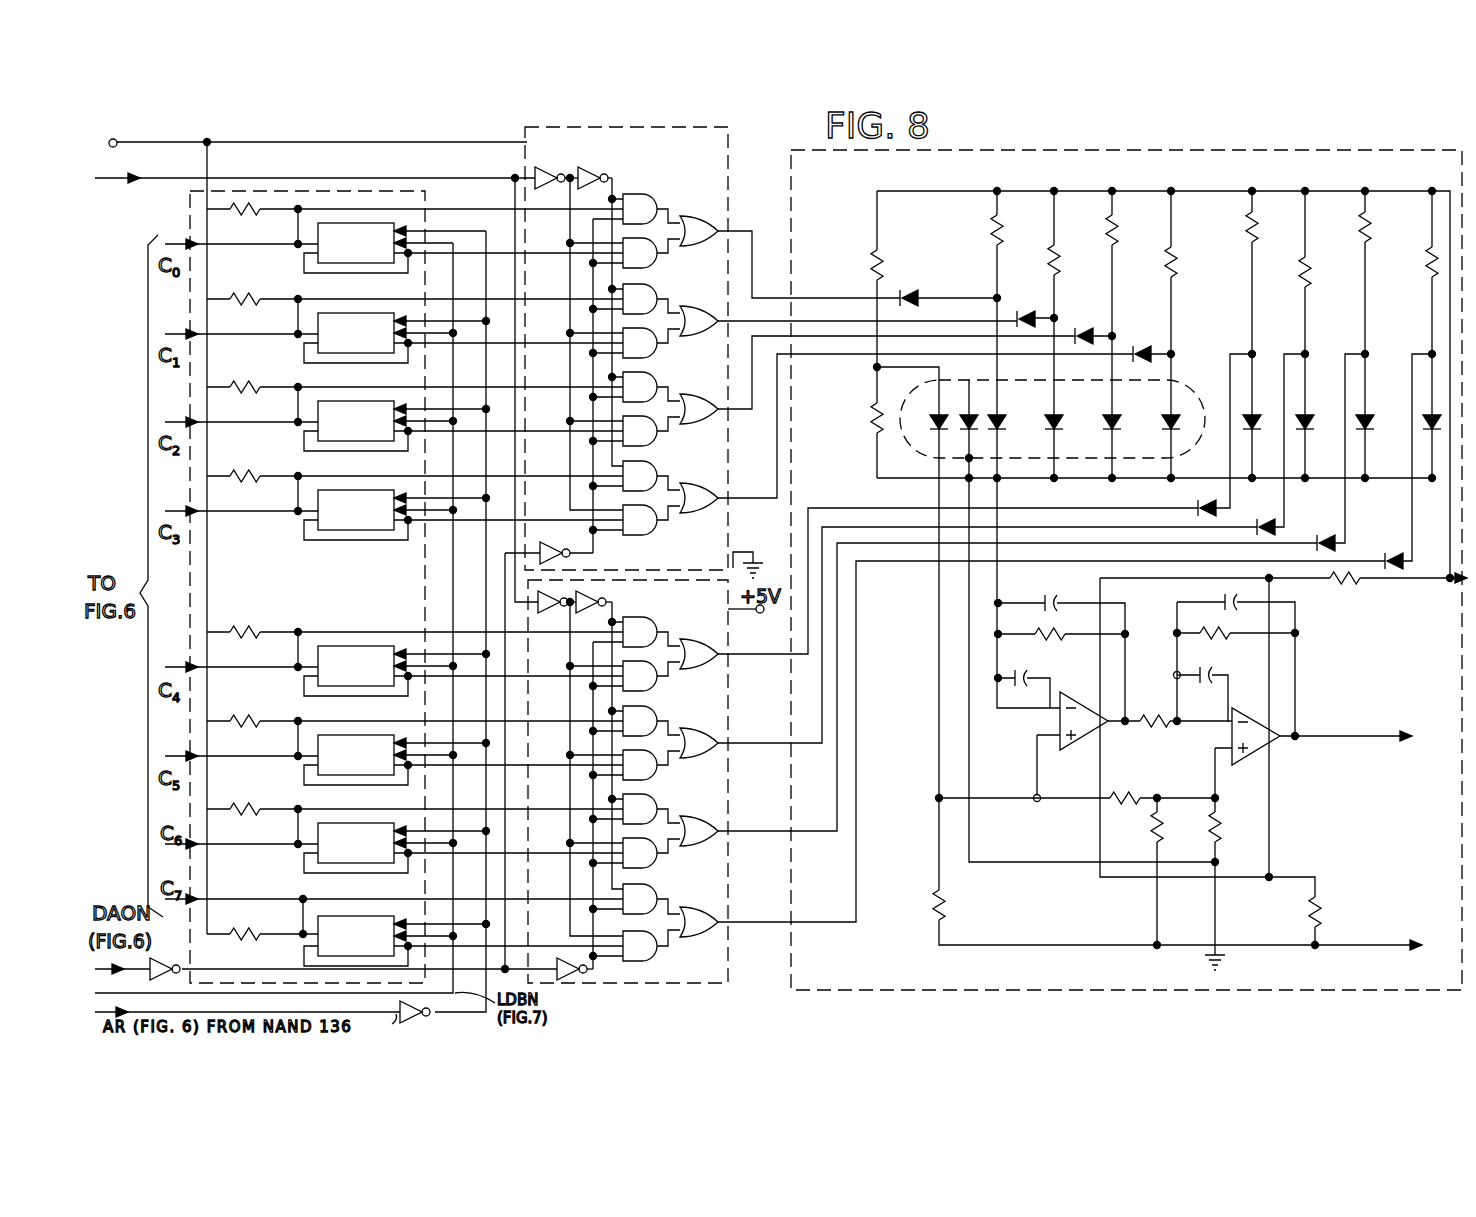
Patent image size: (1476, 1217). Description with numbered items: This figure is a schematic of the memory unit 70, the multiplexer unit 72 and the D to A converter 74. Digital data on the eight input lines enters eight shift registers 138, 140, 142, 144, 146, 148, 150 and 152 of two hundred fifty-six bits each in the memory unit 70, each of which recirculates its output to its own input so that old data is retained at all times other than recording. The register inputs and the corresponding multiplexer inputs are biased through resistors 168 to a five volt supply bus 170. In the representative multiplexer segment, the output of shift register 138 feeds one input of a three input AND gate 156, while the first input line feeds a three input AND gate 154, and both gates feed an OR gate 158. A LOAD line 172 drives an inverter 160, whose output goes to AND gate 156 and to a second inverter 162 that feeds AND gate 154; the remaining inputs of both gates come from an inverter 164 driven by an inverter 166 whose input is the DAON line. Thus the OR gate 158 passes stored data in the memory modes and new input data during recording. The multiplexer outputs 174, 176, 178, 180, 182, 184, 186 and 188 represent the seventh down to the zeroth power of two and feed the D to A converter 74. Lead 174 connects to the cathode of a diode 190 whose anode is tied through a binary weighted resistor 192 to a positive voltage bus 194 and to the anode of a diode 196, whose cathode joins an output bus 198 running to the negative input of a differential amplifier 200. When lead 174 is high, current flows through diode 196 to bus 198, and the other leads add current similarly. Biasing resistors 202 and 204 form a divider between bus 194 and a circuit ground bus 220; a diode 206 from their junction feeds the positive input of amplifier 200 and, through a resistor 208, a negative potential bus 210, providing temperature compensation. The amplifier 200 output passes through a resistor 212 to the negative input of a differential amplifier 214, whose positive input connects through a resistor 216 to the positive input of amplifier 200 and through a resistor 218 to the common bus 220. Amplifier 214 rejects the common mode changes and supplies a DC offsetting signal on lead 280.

The memory unit 70 is at (186, 200).
The multiplexer unit 72 is at (728, 147).
The D to A converter 74 is at (1045, 991).
The shift register 138 is at (372, 255).
The shift register 140 is at (372, 345).
The shift register 142 is at (372, 433).
The shift register 144 is at (372, 522).
The shift register 146 is at (372, 678).
The shift register 148 is at (372, 767).
The shift register 150 is at (372, 855).
The shift register 152 is at (372, 948).
The three input AND gate 154 is at (640, 193).
The three input AND gate 156 is at (650, 262).
The OR gate 158 is at (690, 216).
The inverter 160 is at (550, 168).
The inverter 162 is at (596, 168).
The inverter 164 is at (568, 560).
The inverter 166 is at (152, 956).
The resistors 168 is at (238, 214).
The bus 170 is at (296, 142).
The LOAD line 172 is at (298, 178).
The multiplexer output lead 174 is at (752, 236).
The multiplexer output lead 176 is at (730, 323).
The multiplexer output lead 178 is at (742, 411).
The multiplexer output lead 180 is at (745, 500).
The multiplexer output lead 182 is at (778, 657).
The multiplexer output lead 184 is at (780, 746).
The multiplexer output lead 186 is at (780, 834).
The multiplexer output lead 188 is at (780, 920).
The diode 190 is at (912, 291).
The resistor 192 is at (997, 235).
The positive voltage bus 194 is at (1325, 190).
The diode 196 is at (1000, 425).
The output bus 198 is at (1000, 590).
The differential amplifier 200 is at (1080, 746).
The biasing resistor 202 is at (877, 266).
The biasing resistor 204 is at (877, 420).
The diode 206 is at (935, 425).
The resistor 208 is at (946, 908).
The negative potential bus 210 is at (1100, 944).
The resistor 212 is at (1152, 728).
The differential amplifier 214 is at (1260, 758).
The resistor 216 is at (1120, 805).
The resistor 218 is at (1218, 824).
The circuit ground bus 220 is at (1218, 926).
The lead 280 is at (1313, 736).